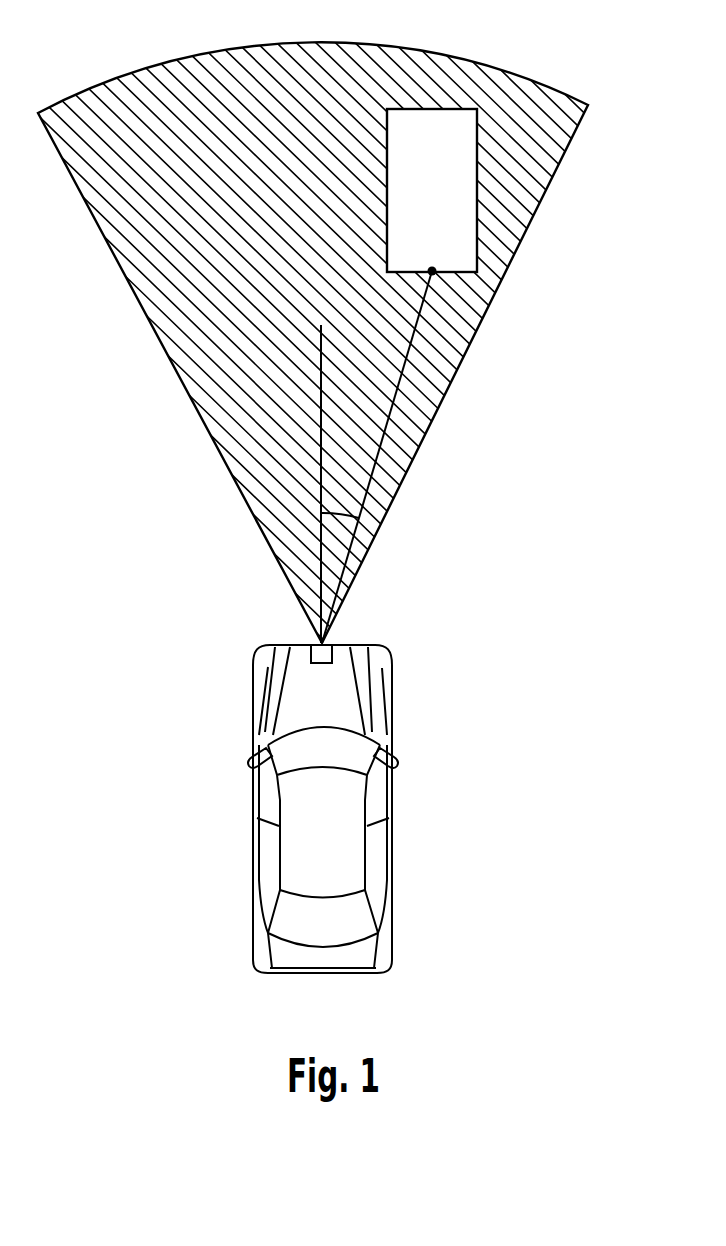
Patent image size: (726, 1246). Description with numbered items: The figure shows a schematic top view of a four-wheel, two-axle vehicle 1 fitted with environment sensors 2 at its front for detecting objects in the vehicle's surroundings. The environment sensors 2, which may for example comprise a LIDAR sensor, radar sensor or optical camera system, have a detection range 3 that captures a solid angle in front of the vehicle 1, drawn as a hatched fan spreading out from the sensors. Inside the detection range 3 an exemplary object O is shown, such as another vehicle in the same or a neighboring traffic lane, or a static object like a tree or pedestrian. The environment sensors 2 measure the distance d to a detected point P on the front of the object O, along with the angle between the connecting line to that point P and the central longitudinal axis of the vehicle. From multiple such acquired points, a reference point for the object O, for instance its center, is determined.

The vehicle 1 is at (408, 757).
The environment sensors 2 is at (330, 640).
The detection range 3 is at (167, 319).
The object O is at (468, 180).
The point P is at (433, 273).
The distance d is at (377, 457).